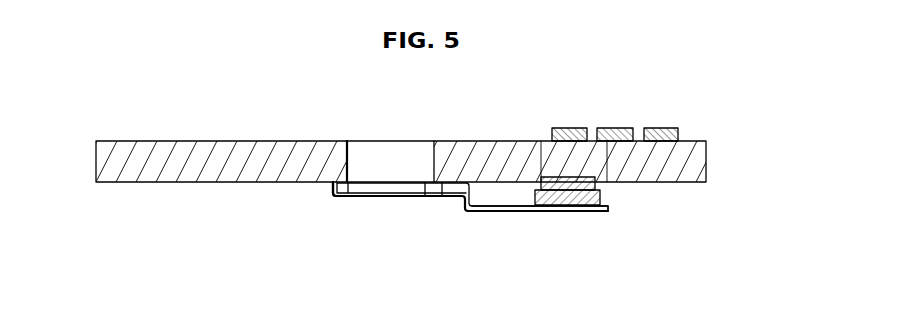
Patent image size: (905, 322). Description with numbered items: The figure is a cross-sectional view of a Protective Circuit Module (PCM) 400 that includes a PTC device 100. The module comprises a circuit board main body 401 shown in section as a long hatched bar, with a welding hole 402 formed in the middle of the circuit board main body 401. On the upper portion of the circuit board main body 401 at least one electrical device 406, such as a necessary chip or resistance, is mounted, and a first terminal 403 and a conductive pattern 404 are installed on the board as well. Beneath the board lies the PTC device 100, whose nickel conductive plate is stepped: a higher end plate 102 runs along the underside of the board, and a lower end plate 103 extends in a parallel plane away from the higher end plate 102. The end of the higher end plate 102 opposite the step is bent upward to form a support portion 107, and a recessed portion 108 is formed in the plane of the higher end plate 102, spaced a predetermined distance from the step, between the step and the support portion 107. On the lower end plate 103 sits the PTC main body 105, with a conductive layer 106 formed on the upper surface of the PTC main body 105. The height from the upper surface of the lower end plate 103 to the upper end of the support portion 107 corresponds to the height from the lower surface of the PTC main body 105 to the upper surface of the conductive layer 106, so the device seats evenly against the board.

The Protective Circuit Module (PCM) 400 is at (71, 116).
The circuit board main body 401 is at (700, 160).
The welding hole 402 is at (389, 150).
The first terminal 403 is at (541, 170).
The conductive pattern 404 is at (606, 185).
The electrical device 406 is at (658, 128).
The PTC device 100 is at (501, 222).
The higher end plate 102 is at (377, 200).
The lower end plate 103 is at (503, 212).
The PTC main body 105 is at (605, 205).
The conductive layer 106 is at (563, 206).
The support portion 107 is at (330, 198).
The recessed portion 108 is at (430, 200).